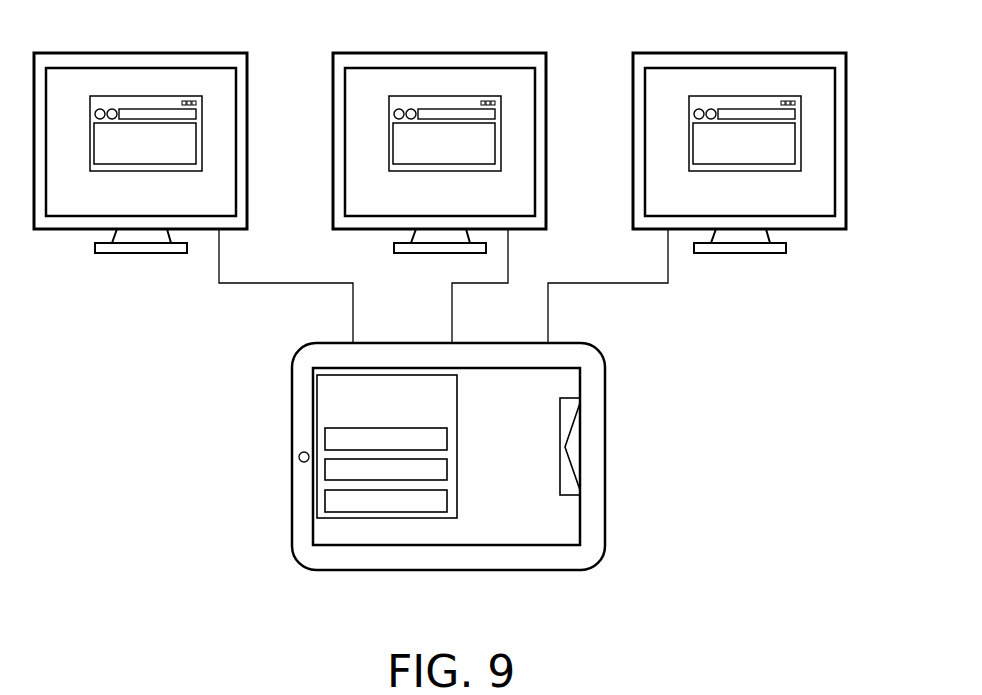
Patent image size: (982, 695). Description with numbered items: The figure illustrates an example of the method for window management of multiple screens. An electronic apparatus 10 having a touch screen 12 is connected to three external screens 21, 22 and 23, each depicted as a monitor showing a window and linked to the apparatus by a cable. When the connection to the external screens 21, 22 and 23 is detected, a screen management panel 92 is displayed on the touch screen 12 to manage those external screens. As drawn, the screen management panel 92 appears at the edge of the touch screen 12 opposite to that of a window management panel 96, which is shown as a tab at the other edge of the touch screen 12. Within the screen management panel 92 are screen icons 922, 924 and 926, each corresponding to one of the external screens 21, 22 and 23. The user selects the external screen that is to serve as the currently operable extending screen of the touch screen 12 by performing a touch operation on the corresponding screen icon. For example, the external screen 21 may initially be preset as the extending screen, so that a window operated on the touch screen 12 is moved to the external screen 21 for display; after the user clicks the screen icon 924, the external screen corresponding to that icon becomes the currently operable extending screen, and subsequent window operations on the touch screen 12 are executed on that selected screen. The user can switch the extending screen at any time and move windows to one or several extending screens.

The electronic apparatus 10 is at (370, 571).
The touch screen 12 is at (513, 546).
The external screen 21 is at (632, 92).
The external screen 22 is at (549, 153).
The external screen 23 is at (249, 154).
The screen management panel 92 is at (328, 373).
The screen icon 922 is at (325, 435).
The screen icon 924 is at (325, 468).
The screen icon 926 is at (325, 507).
The window management panel 96 is at (568, 495).